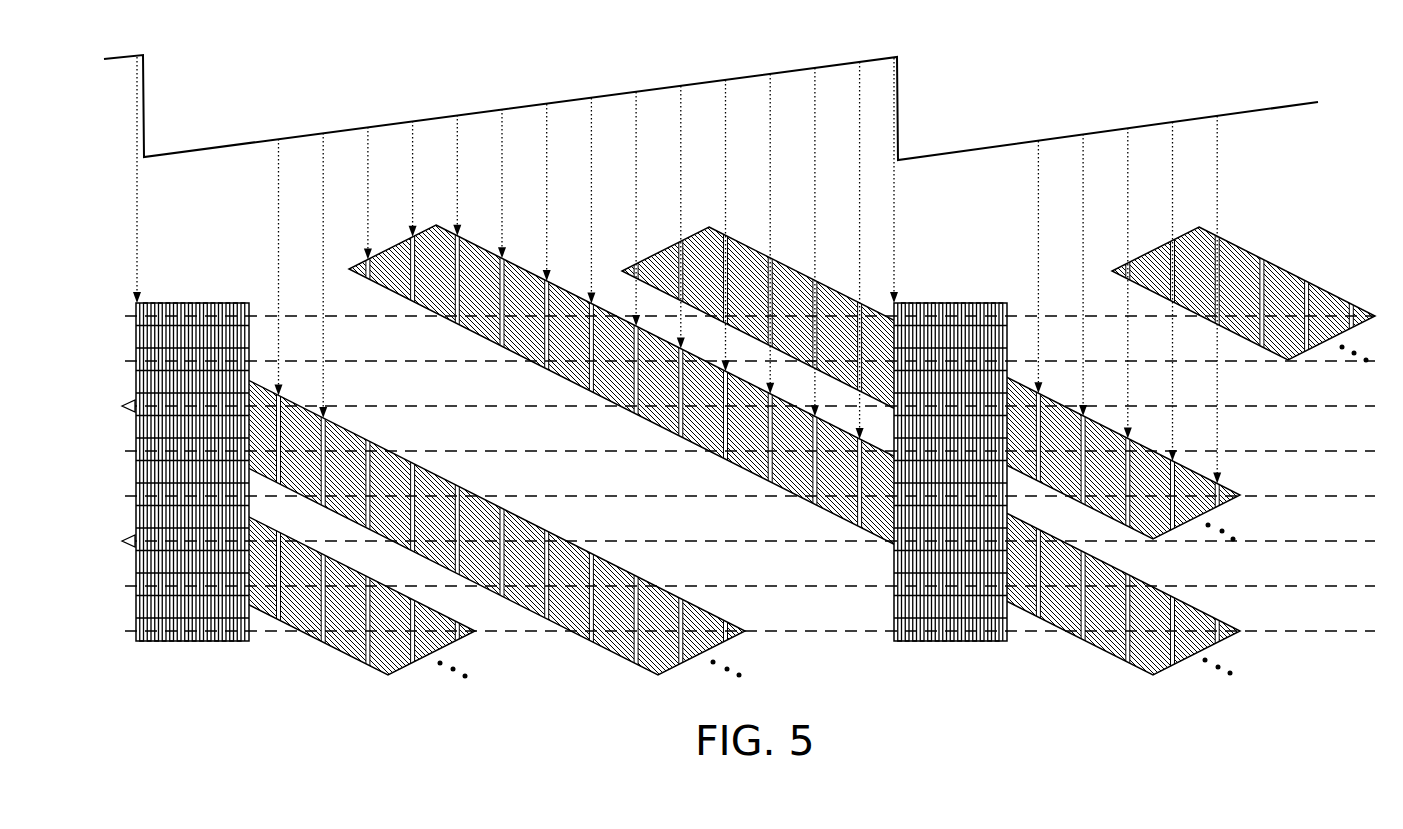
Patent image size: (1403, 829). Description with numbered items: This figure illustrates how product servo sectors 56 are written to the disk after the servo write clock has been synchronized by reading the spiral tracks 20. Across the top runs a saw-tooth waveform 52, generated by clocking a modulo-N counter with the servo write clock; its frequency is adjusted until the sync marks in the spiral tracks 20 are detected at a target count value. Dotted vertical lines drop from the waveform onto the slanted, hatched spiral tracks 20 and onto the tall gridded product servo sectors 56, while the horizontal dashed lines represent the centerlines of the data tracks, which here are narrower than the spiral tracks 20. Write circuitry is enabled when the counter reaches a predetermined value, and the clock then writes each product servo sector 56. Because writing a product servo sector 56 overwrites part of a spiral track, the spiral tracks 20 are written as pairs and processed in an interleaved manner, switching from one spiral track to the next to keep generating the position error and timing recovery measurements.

The saw-tooth waveform 52 is at (567, 99).
The spiral tracks 20 is at (701, 450).
The product servo sector 56 is at (571, 496).